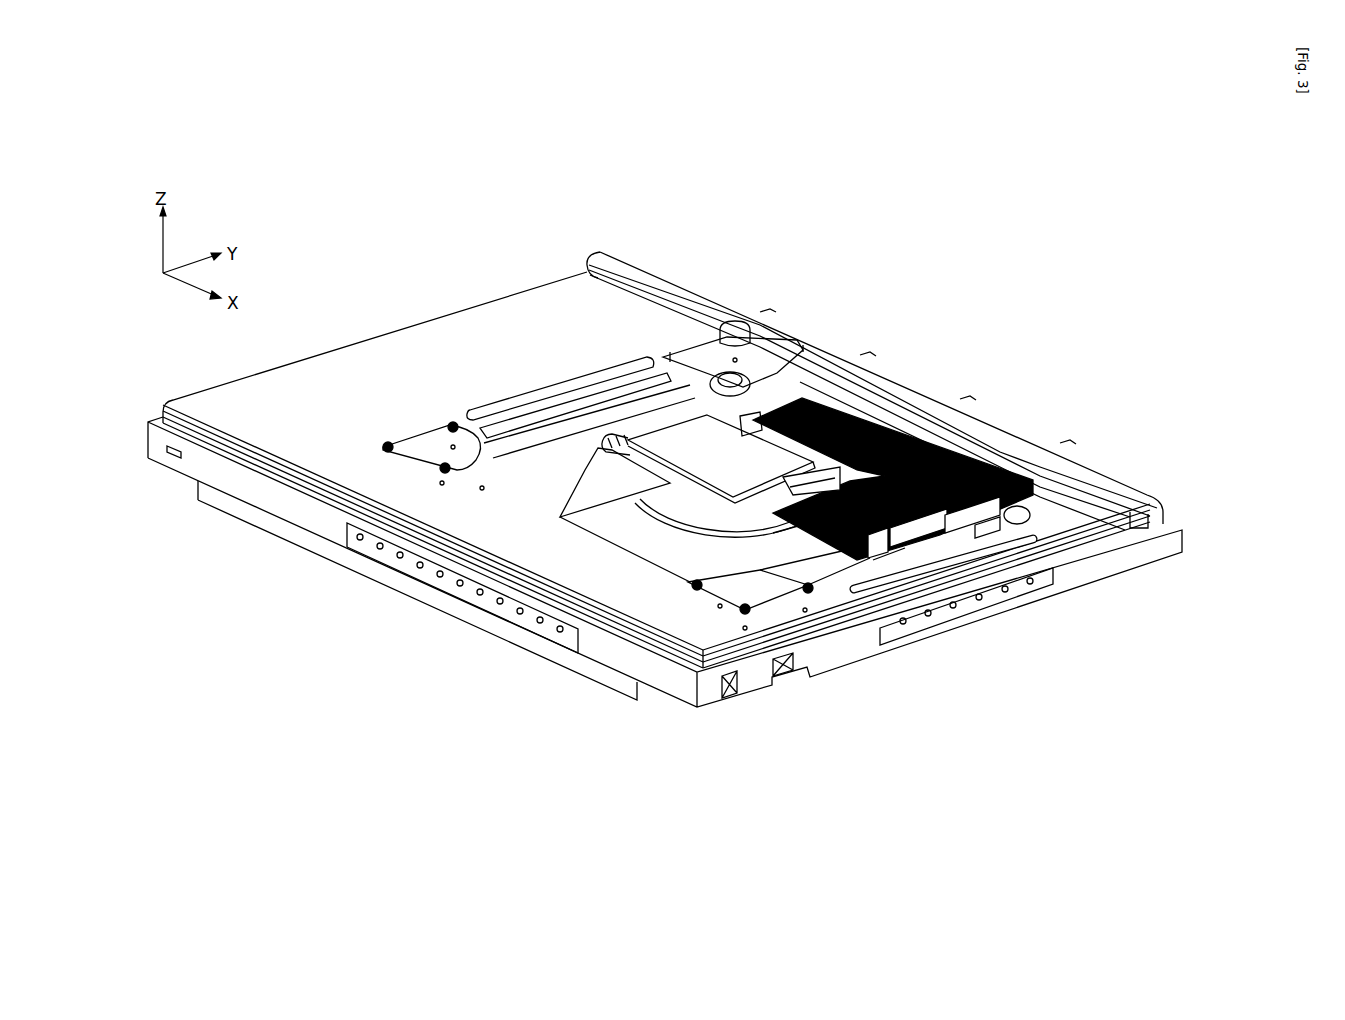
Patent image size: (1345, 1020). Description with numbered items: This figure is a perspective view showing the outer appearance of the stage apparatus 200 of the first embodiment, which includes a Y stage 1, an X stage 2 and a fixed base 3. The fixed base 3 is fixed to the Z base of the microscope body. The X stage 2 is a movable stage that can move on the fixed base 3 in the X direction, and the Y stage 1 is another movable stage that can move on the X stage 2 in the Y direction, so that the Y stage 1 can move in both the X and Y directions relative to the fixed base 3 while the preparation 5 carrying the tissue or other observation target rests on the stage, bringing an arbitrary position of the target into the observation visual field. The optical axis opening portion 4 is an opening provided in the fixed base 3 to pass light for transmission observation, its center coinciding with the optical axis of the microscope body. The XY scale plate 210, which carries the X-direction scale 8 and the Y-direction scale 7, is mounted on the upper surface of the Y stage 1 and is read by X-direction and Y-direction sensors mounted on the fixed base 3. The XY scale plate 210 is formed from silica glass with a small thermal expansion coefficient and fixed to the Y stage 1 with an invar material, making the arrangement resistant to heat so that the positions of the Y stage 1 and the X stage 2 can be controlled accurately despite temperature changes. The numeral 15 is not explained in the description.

The stage apparatus 200 is at (705, 201).
The Y stage 1 is at (372, 352).
The X stage 2 is at (200, 463).
The fixed base 3 is at (282, 528).
The optical axis opening portion 4 is at (688, 503).
The preparation 5 is at (673, 450).
The Y-direction scale 7 is at (933, 455).
The X-direction scale 8 is at (820, 543).
The support plate 15 is at (688, 522).
The XY scale plate 210 is at (847, 482).